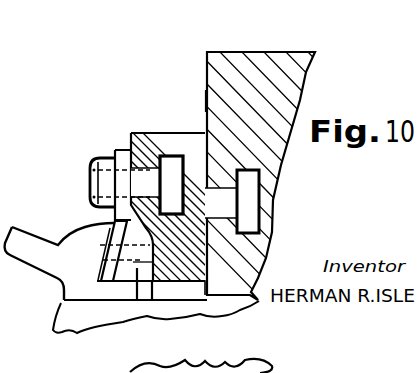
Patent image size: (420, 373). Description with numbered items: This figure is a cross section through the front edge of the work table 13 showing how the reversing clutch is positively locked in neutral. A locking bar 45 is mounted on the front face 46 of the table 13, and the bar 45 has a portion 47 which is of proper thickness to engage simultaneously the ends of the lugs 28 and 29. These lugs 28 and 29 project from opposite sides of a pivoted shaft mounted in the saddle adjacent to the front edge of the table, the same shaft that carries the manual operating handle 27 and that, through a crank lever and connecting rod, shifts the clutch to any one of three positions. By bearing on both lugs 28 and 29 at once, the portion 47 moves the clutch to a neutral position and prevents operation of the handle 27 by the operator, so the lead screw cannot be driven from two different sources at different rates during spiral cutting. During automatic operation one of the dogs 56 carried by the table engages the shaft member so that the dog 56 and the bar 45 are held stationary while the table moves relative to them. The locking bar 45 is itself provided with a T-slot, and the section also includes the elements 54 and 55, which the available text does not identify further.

The table 13 is at (275, 62).
The manual operating handle 27 is at (25, 249).
The lug 28 is at (108, 223).
The lug 29 is at (147, 272).
The locking bar 45 is at (178, 147).
The front face 46 is at (206, 100).
The portion 47 is at (182, 275).
The T-head 54 is at (153, 178).
The washer 55 is at (126, 157).
The dog 56 is at (126, 163).